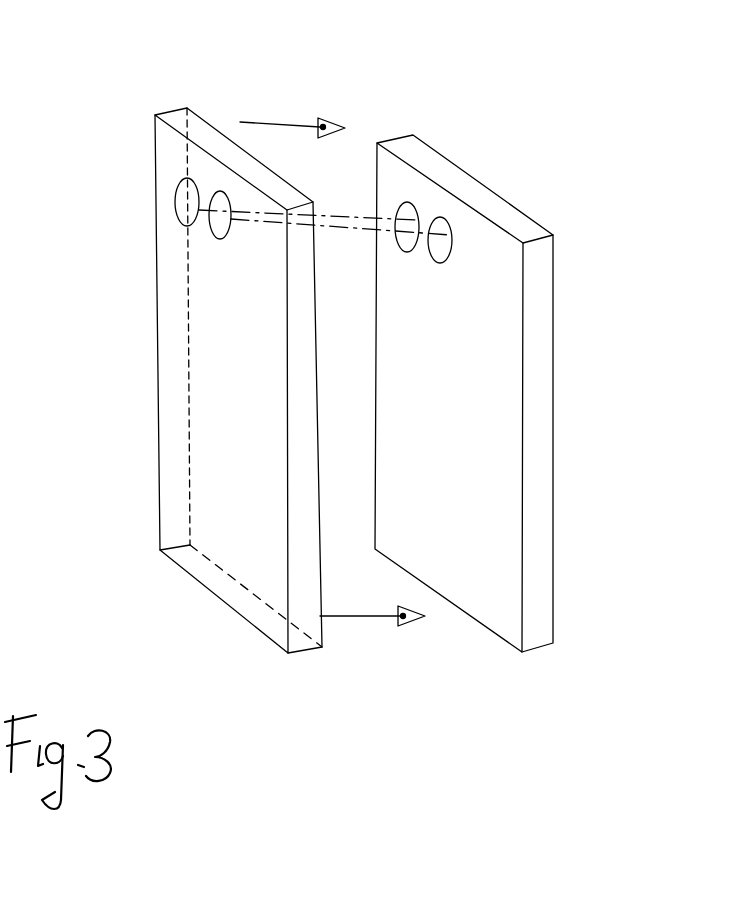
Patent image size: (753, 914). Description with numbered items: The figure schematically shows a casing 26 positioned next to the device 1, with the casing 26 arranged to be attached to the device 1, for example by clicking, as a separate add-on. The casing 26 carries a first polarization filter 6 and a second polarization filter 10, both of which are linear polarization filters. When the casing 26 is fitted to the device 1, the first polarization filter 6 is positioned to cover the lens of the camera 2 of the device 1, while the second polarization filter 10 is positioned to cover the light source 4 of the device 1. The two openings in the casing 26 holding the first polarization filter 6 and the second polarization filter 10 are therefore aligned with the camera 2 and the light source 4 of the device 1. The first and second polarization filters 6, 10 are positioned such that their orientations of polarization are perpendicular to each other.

The device 1 is at (505, 5).
The casing 26 is at (207, 135).
The first polarization filter 6 is at (185, 205).
The second polarization filter 10 is at (218, 229).
The camera 2 is at (410, 210).
The light source 4 is at (445, 228).